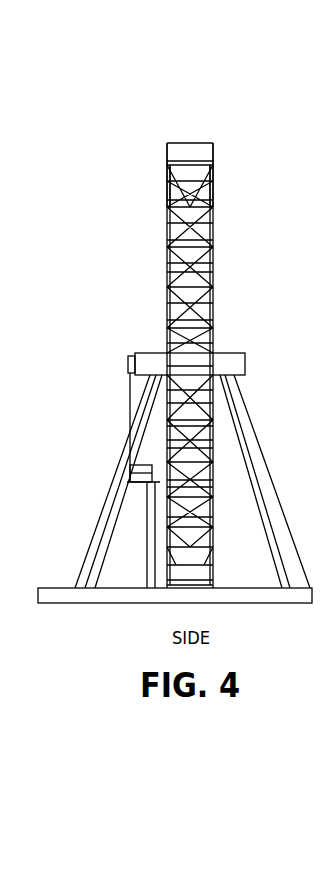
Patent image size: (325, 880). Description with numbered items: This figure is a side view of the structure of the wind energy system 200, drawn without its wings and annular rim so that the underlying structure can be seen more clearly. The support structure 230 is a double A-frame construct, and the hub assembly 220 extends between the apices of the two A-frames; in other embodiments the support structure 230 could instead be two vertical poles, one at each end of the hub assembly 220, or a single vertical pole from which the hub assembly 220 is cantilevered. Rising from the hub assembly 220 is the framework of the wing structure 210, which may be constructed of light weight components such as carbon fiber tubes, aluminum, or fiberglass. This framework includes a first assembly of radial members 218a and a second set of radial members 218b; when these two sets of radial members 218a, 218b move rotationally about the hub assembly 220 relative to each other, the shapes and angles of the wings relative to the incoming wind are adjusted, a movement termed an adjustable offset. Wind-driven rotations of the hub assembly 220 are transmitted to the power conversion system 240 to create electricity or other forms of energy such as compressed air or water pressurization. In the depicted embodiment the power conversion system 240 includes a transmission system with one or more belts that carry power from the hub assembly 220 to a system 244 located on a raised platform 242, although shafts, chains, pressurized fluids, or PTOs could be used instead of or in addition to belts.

The wind energy system 200 is at (255, 100).
The wing structure 210 is at (240, 195).
The first assembly of radial members 218a is at (167, 165).
The second set of radial members 218b is at (213, 160).
The hub assembly 220 is at (240, 353).
The support structure 230 is at (88, 535).
The power conversion system 240 is at (110, 395).
The raised platform 242 is at (145, 492).
The system 244 is at (138, 462).